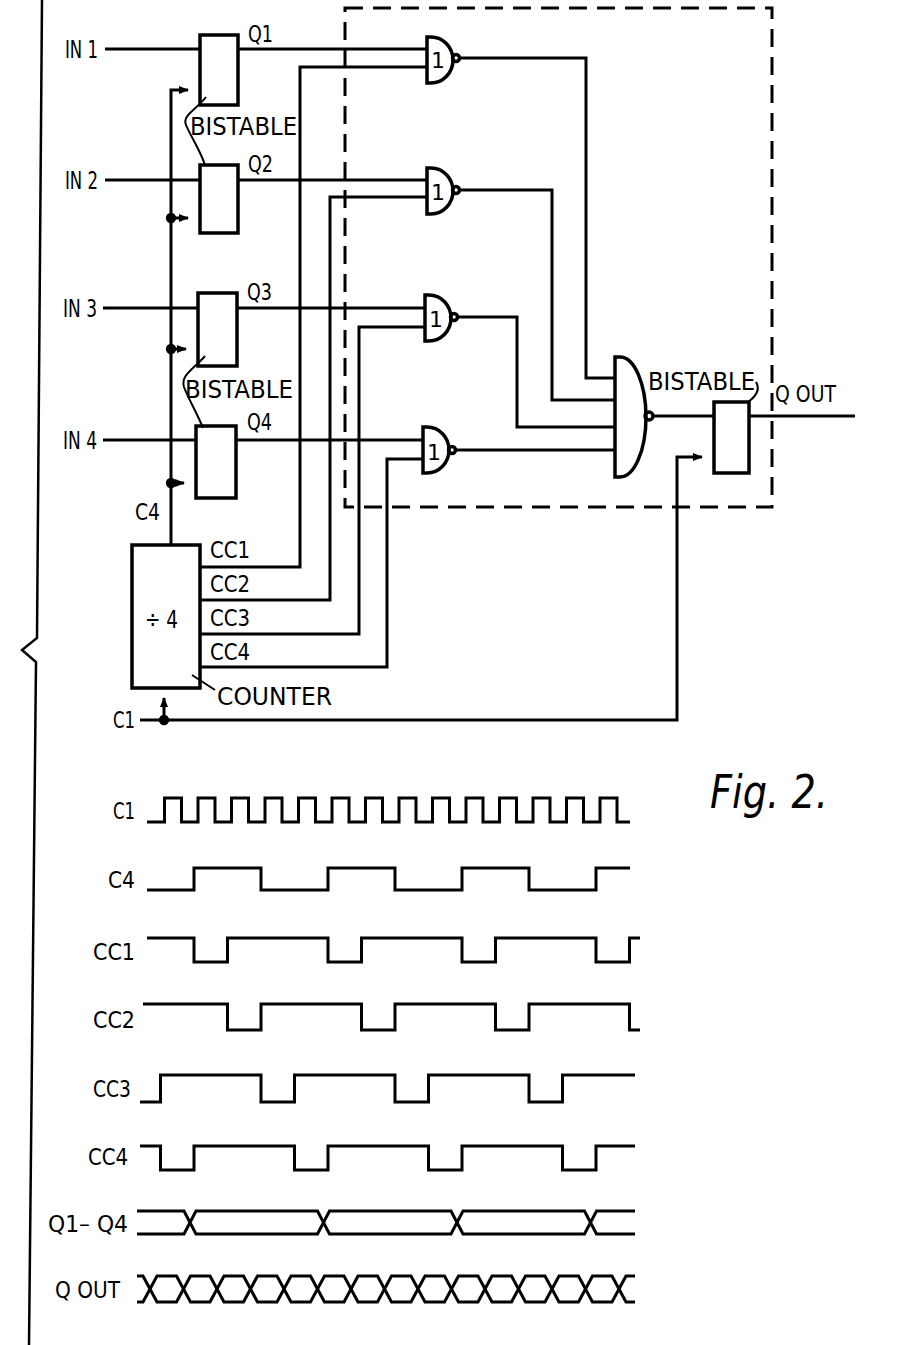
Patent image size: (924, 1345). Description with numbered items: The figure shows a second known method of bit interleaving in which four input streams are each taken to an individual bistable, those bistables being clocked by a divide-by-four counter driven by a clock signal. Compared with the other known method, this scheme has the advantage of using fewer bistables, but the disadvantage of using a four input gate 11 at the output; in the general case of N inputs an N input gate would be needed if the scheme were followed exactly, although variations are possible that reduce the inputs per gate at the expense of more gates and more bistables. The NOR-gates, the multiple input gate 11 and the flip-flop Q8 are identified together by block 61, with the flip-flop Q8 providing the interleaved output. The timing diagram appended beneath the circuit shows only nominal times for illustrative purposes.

The block 61 is at (738, 216).
The four input gate 11 is at (636, 372).
The flip-flop Q8 is at (737, 448).